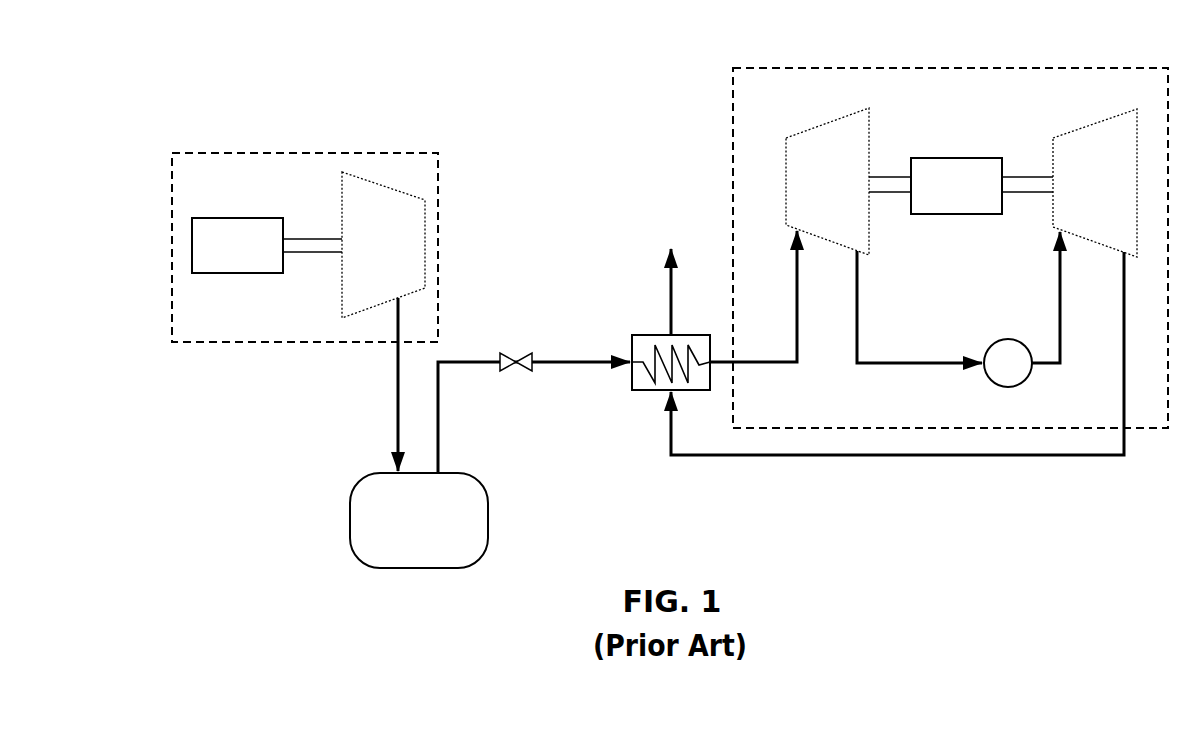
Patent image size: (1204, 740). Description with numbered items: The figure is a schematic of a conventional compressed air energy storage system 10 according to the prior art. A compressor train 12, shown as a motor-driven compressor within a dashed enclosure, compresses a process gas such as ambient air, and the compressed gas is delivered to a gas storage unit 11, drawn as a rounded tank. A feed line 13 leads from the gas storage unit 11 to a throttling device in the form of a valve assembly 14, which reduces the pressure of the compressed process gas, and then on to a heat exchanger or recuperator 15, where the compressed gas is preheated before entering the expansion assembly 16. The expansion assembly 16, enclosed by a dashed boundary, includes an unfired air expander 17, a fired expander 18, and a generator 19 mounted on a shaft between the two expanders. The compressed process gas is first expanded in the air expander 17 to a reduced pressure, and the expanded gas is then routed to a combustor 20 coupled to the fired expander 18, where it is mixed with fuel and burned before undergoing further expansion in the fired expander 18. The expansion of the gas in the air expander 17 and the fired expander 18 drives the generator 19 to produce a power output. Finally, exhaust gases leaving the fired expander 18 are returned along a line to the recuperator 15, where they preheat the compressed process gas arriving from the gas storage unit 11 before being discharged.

The CAES system 10 is at (311, 100).
The gas storage unit 11 is at (433, 535).
The compressor train 12 is at (197, 148).
The feed line 13 is at (452, 365).
The valve assembly 14 is at (517, 357).
The recuperator 15 is at (632, 333).
The expansion assembly 16 is at (950, 63).
The air expander 17 is at (798, 137).
The fired expander 18 is at (1057, 135).
The generator 19 is at (971, 200).
The combustor 20 is at (987, 383).